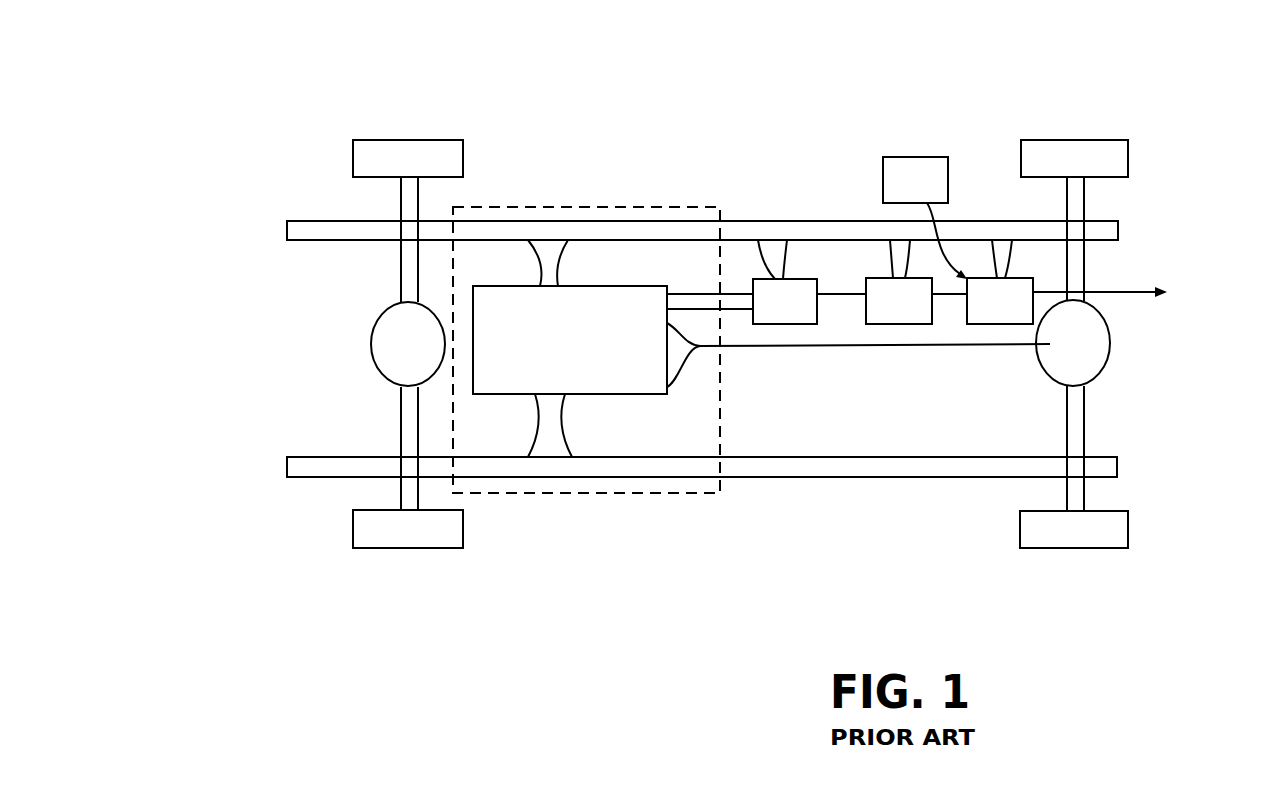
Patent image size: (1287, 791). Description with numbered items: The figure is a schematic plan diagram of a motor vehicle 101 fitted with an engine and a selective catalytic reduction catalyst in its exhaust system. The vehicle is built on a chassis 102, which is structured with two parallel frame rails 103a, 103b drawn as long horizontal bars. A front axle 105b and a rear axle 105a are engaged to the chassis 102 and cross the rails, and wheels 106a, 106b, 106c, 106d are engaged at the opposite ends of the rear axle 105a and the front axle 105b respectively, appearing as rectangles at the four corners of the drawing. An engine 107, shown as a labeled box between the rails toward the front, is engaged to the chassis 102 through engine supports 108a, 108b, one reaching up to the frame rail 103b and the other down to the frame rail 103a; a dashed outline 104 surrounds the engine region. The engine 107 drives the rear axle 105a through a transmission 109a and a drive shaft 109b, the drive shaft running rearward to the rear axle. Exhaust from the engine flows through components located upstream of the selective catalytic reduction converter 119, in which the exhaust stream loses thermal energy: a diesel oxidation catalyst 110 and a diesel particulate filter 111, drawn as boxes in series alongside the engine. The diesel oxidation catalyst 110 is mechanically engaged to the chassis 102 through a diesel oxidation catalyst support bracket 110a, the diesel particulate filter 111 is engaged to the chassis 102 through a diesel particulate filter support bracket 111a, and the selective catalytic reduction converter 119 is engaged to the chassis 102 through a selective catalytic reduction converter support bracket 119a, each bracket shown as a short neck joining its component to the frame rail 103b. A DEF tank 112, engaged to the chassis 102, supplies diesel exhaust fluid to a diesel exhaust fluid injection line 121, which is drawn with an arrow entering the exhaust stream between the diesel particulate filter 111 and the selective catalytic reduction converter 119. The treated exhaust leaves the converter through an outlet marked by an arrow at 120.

The motor vehicle 101 is at (803, 221).
The chassis 102 is at (688, 233).
The frame rail 103a is at (823, 465).
The frame rail 103b is at (967, 221).
The engine compartment 104 is at (605, 207).
The rear axle 105a is at (1110, 340).
The front axle 105b is at (371, 334).
The wheel 106a is at (1128, 148).
The wheel 106b is at (1128, 532).
The wheel 106c is at (353, 530).
The wheel 106d is at (353, 158).
The engine 107 is at (490, 286).
The engine support 108a is at (552, 252).
The engine support 108b is at (552, 442).
The transmission 109a is at (678, 360).
The drive shaft 109b is at (893, 347).
The diesel oxidation catalyst 110 is at (818, 283).
The diesel oxidation catalyst support bracket 110a is at (758, 240).
The diesel particulate filter 111 is at (932, 324).
The diesel particulate filter support bracket 111a is at (892, 242).
The DEF tank 112 is at (923, 157).
The selective catalytic reduction converter 119 is at (1035, 286).
The selective catalytic reduction converter support bracket 119a is at (1010, 270).
The exhaust outlet 120 is at (1125, 291).
The diesel exhaust fluid injection line 121 is at (962, 276).